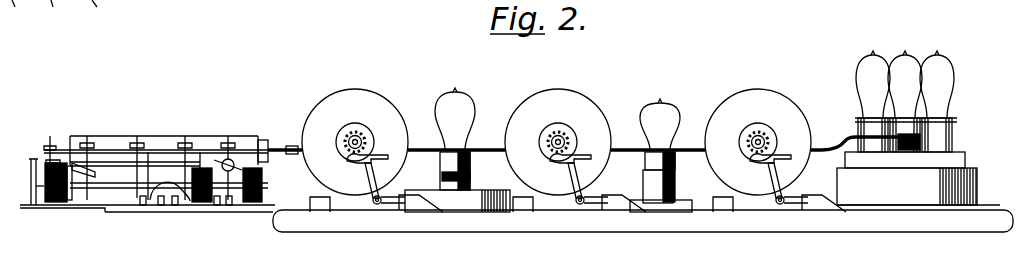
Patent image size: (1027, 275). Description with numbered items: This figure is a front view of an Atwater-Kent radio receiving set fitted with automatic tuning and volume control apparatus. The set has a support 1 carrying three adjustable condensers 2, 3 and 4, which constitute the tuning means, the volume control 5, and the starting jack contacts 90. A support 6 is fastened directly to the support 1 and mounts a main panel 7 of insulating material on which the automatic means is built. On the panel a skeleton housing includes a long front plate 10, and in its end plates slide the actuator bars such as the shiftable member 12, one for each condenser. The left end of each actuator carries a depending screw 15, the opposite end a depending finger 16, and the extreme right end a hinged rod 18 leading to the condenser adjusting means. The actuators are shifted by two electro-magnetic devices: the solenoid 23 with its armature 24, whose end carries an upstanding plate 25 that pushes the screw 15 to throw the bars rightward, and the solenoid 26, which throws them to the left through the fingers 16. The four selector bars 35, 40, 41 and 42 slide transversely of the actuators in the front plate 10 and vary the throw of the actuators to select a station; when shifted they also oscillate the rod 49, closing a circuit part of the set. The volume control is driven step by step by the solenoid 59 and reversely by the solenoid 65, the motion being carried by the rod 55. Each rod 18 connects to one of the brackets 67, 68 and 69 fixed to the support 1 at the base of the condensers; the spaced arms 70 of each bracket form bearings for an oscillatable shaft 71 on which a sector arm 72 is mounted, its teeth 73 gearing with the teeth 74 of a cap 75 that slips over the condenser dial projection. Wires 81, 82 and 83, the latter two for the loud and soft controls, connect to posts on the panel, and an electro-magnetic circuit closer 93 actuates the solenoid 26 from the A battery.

The support 1 is at (540, 233).
The condenser 2 is at (355, 136).
The condenser 3 is at (558, 136).
The condenser 4 is at (758, 135).
The volume control 5 is at (903, 153).
The support 6 is at (158, 213).
The main panel 7 is at (56, 208).
The front plate 10 is at (158, 137).
The shiftable member 12 is at (278, 147).
The screw 15 is at (51, 146).
The finger 16 is at (260, 140).
The hinged rod 18 is at (425, 149).
The solenoid 23 is at (109, 162).
The armature 24 is at (36, 186).
The upstanding plate 25 is at (30, 170).
The solenoid 26 is at (163, 152).
The selector bar 35 is at (87, 142).
The selector bar 40 is at (138, 142).
The selector bar 41 is at (188, 142).
The selector bar 42 is at (229, 142).
The oscillatable rod 49 is at (98, 189).
The rod 55 is at (288, 156).
The solenoid 59 is at (203, 204).
The solenoid 65 is at (255, 204).
The bracket 67 is at (421, 213).
The bracket 68 is at (624, 213).
The bracket 69 is at (824, 213).
The spaced arms 70 is at (599, 214).
The oscillatable shaft 71 is at (569, 213).
The sector arm 72 is at (562, 180).
The teeth 73 is at (577, 144).
The teeth 74 is at (570, 128).
The cap 75 is at (556, 131).
The wire 81 is at (22, 12).
The wire 82 is at (59, 12).
The wire 83 is at (104, 12).
The starting jack contacts 90 is at (650, 192).
The electro-magnetic circuit closer 93 is at (44, 209).